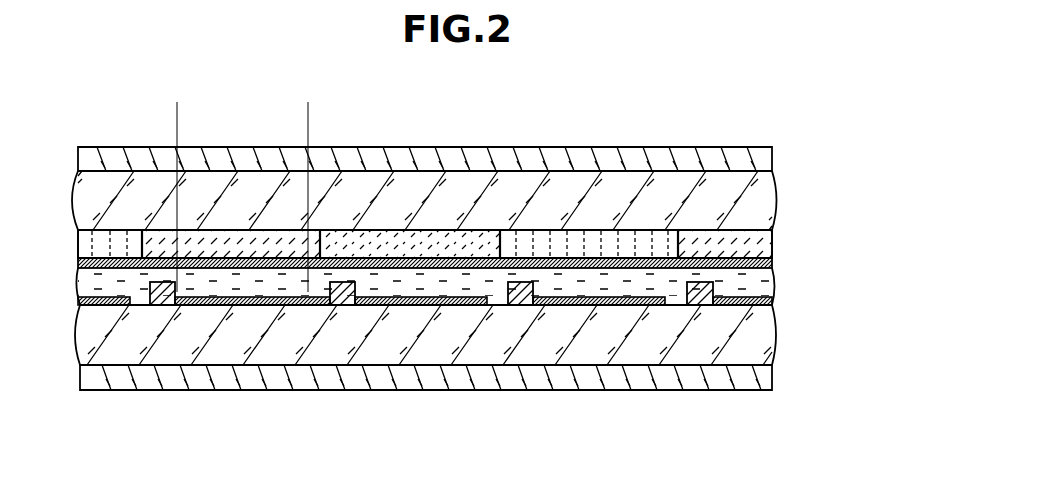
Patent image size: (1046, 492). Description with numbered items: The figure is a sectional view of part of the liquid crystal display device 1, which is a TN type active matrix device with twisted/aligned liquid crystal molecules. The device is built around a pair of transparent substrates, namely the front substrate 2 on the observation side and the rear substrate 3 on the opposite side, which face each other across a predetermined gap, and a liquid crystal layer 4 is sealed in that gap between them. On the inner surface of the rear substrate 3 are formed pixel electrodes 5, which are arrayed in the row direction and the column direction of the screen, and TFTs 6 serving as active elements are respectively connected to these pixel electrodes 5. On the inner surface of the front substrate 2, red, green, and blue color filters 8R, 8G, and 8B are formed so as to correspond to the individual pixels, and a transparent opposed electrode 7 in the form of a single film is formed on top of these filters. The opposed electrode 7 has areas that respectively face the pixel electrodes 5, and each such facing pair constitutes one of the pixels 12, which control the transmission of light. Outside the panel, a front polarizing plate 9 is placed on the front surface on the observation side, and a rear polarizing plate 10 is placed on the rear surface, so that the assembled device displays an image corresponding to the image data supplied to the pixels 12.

The liquid crystal display device 1 is at (800, 148).
The front substrate 2 is at (755, 203).
The rear substrate 3 is at (763, 323).
The liquid crystal layer 4 is at (763, 278).
The pixel electrodes 5 is at (255, 300).
The TFTs 6 is at (168, 297).
The opposed electrode 7 is at (463, 247).
The blue color filter 8B is at (120, 247).
The red color filter 8R is at (162, 247).
The green color filter 8G is at (395, 247).
The front polarizing plate 9 is at (747, 160).
The rear polarizing plate 10 is at (747, 378).
The pixels 12 is at (308, 115).